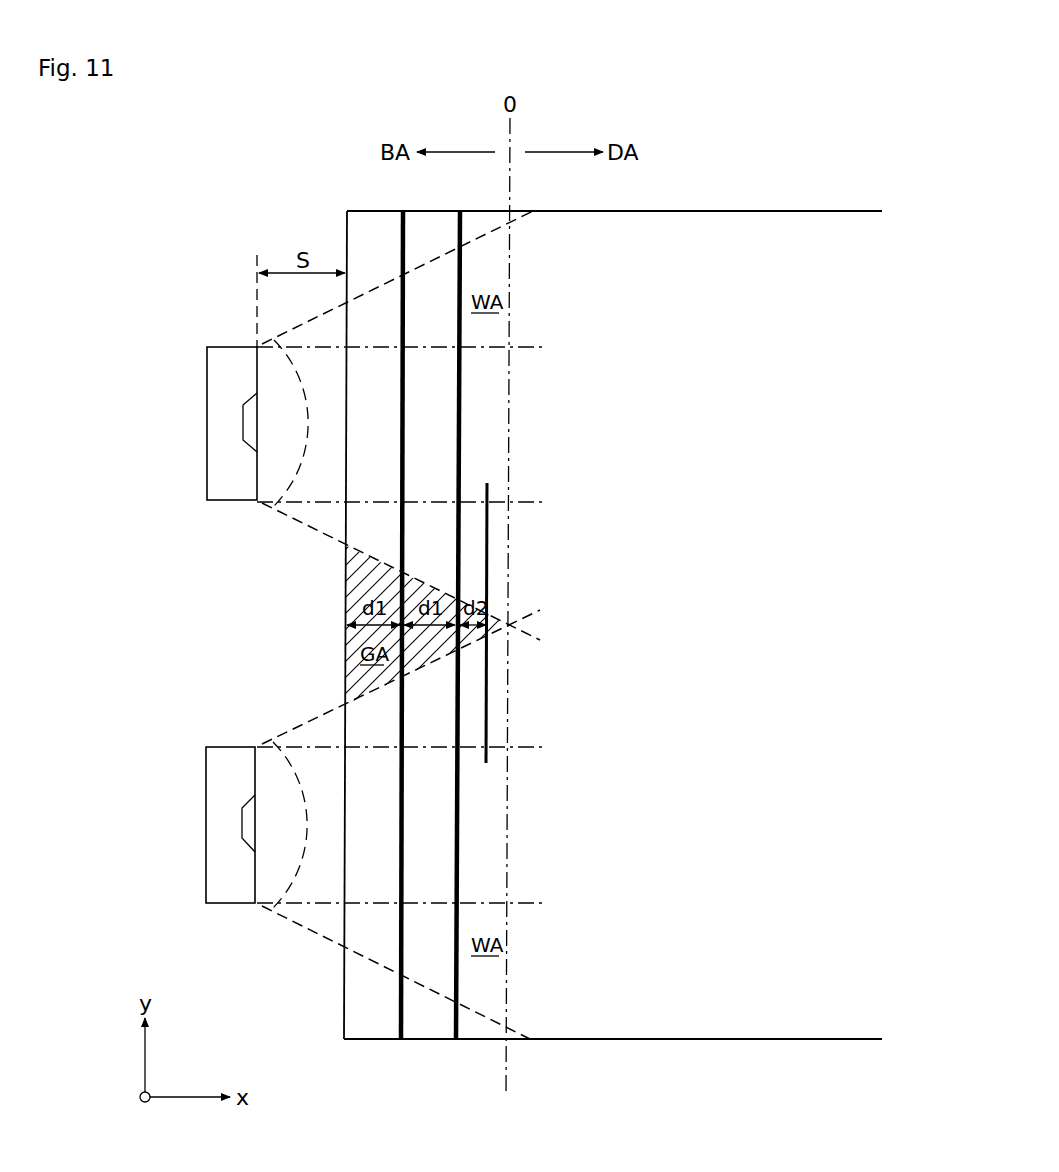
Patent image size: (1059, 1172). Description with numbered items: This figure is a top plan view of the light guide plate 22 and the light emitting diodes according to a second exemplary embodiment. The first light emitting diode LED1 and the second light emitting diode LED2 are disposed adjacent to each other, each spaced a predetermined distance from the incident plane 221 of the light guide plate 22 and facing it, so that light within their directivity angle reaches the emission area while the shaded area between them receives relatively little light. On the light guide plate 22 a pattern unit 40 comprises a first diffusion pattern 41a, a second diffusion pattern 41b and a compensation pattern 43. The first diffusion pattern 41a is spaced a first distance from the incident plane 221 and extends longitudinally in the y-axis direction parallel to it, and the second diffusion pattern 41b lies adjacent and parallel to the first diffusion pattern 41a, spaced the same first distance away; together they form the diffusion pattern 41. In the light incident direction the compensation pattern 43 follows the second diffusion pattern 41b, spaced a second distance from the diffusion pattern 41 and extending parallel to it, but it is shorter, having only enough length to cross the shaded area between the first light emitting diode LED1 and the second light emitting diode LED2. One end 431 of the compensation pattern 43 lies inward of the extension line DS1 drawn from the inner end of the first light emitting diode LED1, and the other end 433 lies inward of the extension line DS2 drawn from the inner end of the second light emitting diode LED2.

The light guide plate 22 is at (797, 210).
The incident plane 221 is at (344, 1008).
The pattern unit 40 is at (563, 625).
The diffusion pattern 41 is at (527, 625).
The first diffusion pattern 41a is at (403, 365).
The second diffusion pattern 41b is at (459, 403).
The compensation pattern 43 is at (599, 606).
The one end of the compensation pattern 431 is at (482, 480).
The other end of the compensation pattern 433 is at (486, 763).
The first light emitting diode LED1 is at (213, 425).
The second light emitting diode LED2 is at (213, 826).
The extension line DS1 is at (525, 502).
The extension line DS2 is at (525, 747).